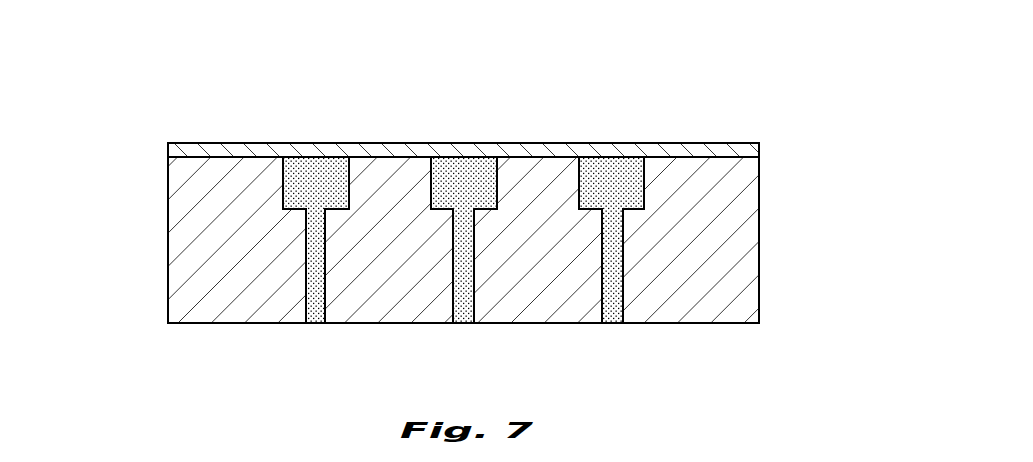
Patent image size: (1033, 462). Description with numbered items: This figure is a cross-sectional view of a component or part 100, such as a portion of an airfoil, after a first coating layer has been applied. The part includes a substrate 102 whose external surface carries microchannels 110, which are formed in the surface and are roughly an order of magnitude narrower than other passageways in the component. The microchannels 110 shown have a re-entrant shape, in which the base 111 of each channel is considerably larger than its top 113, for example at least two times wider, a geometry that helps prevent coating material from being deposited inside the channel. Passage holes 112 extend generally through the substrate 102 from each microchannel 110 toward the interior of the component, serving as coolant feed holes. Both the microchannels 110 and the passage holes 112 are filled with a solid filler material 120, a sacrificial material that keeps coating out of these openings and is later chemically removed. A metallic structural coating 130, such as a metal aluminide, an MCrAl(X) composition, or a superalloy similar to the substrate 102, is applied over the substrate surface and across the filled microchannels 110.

The component or part 100 is at (150, 158).
The substrate 102 is at (742, 269).
The microchannel 110 is at (337, 167).
The base of the microchannel 111 is at (295, 208).
The passage hole 112 is at (315, 322).
The top of the microchannel 113 is at (318, 156).
The solid filler material 120 is at (295, 168).
The metallic structural coating 130 is at (193, 150).